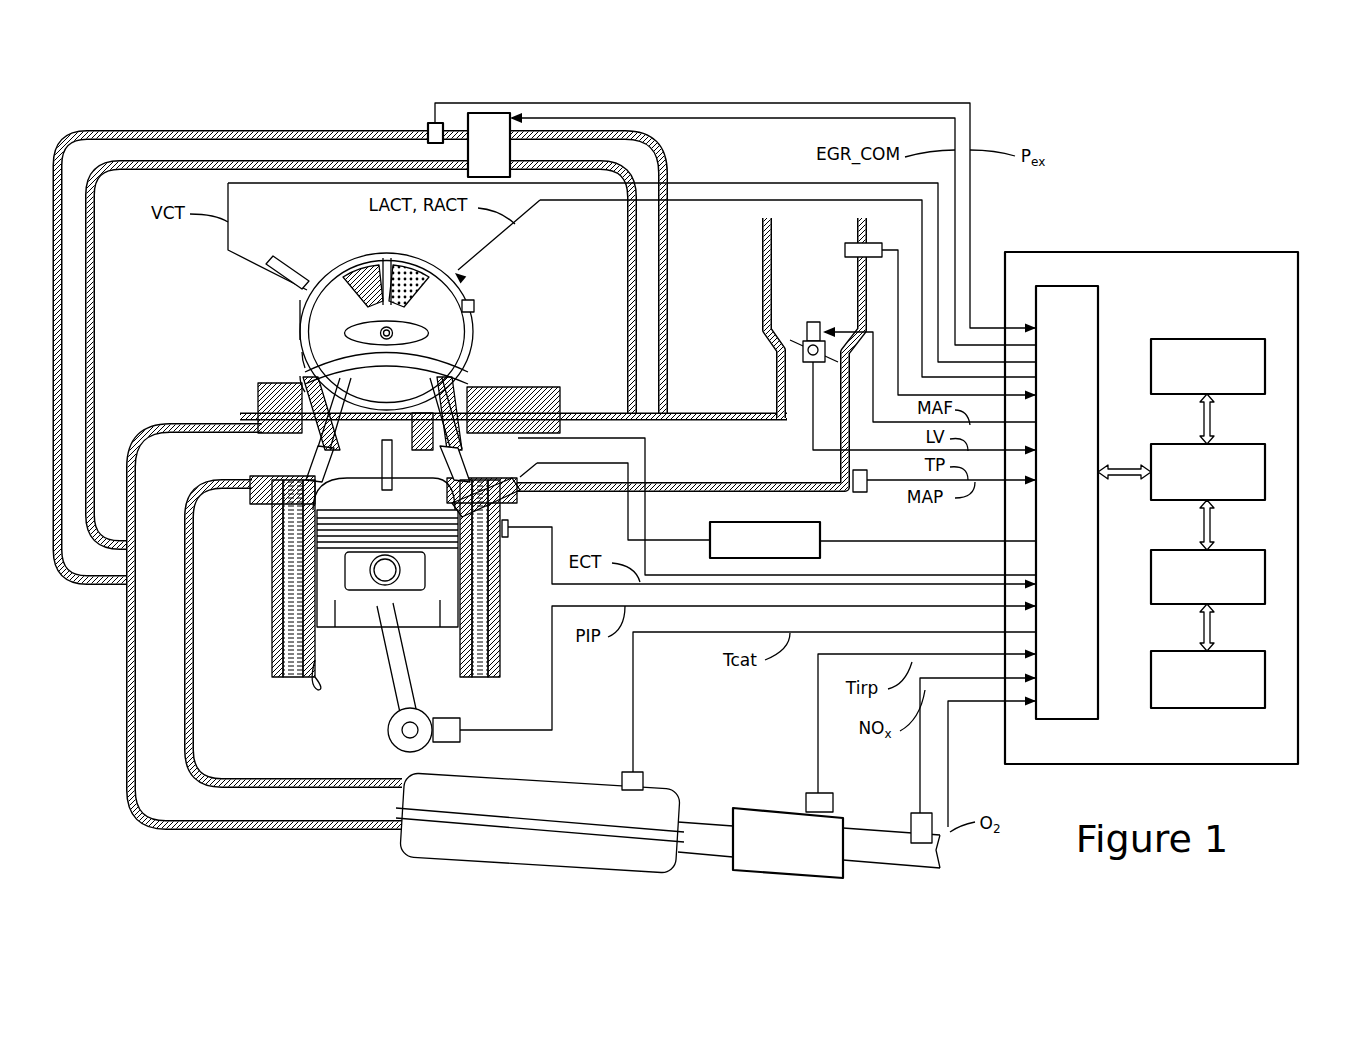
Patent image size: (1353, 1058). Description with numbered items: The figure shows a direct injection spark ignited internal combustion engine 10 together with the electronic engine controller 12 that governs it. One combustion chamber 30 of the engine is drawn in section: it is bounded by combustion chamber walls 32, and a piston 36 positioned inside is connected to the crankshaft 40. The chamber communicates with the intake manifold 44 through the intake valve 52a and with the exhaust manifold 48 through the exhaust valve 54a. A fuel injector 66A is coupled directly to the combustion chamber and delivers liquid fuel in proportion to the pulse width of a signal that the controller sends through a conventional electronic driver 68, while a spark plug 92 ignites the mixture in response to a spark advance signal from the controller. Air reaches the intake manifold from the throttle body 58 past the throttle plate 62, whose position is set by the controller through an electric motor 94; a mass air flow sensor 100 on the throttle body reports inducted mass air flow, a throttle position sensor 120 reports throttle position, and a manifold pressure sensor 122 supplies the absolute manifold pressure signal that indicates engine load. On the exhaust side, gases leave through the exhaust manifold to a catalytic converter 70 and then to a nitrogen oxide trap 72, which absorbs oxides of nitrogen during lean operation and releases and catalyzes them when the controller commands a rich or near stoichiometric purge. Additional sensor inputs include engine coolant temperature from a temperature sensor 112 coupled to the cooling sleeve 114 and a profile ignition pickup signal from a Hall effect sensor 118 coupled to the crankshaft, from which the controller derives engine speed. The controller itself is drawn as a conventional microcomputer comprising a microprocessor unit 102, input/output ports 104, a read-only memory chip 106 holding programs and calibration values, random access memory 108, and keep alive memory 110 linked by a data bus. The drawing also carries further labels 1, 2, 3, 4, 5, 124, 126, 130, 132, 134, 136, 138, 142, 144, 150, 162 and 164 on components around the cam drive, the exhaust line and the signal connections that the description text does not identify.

The cam phaser slot 1 is at (383, 258).
The valve bucket 2 is at (478, 325).
The valve stem 3 is at (480, 380).
The cam ring 4 is at (302, 352).
The cam ring sector 5 is at (300, 300).
The internal combustion engine 10 is at (570, 292).
The electronic engine controller 12 is at (1170, 252).
The combustion chamber 30 is at (290, 553).
The combustion chamber walls 32 is at (320, 676).
The piston 36 is at (290, 636).
The crankshaft 40 is at (388, 735).
The intake manifold 44 is at (679, 467).
The exhaust manifold 48 is at (185, 458).
The intake valve 52a is at (448, 470).
The exhaust valve 54a is at (326, 466).
The throttle body 58 is at (775, 387).
The throttle plate 62 is at (796, 342).
The fuel injector 66A is at (517, 500).
The electronic driver 68 is at (718, 522).
The catalytic converter 70 is at (520, 772).
The NOx trap 72 is at (742, 808).
The spark plug 92 is at (266, 422).
The electric motor 94 is at (815, 322).
The mass air flow sensor 100 is at (846, 244).
The microprocessor unit 102 is at (1151, 462).
The input/output ports 104 is at (1068, 286).
The read-only memory chip 106 is at (1151, 360).
The random access memory 108 is at (1151, 566).
The keep alive memory 110 is at (1151, 670).
The temperature sensor 112 is at (512, 527).
The cooling sleeve 114 is at (503, 630).
The Hall effect sensor 118 is at (455, 718).
The throttle position sensor 120 is at (783, 344).
The manifold pressure sensor 122 is at (866, 493).
The catalyst temperature sensor 124 is at (648, 778).
The trap temperature sensor 126 is at (806, 797).
The camshaft 130 is at (339, 309).
The cam lobe housing 132 is at (300, 380).
The housing tab 134 is at (472, 360).
The retard chamber 136 is at (432, 278).
The cam housing 138 is at (480, 310).
The actuator arm 142 is at (470, 290).
The advance chamber 144 is at (350, 272).
The variable cam timing actuator 150 is at (272, 284).
The oxygen sensor 162 is at (955, 786).
The NOx sensor 164 is at (918, 787).